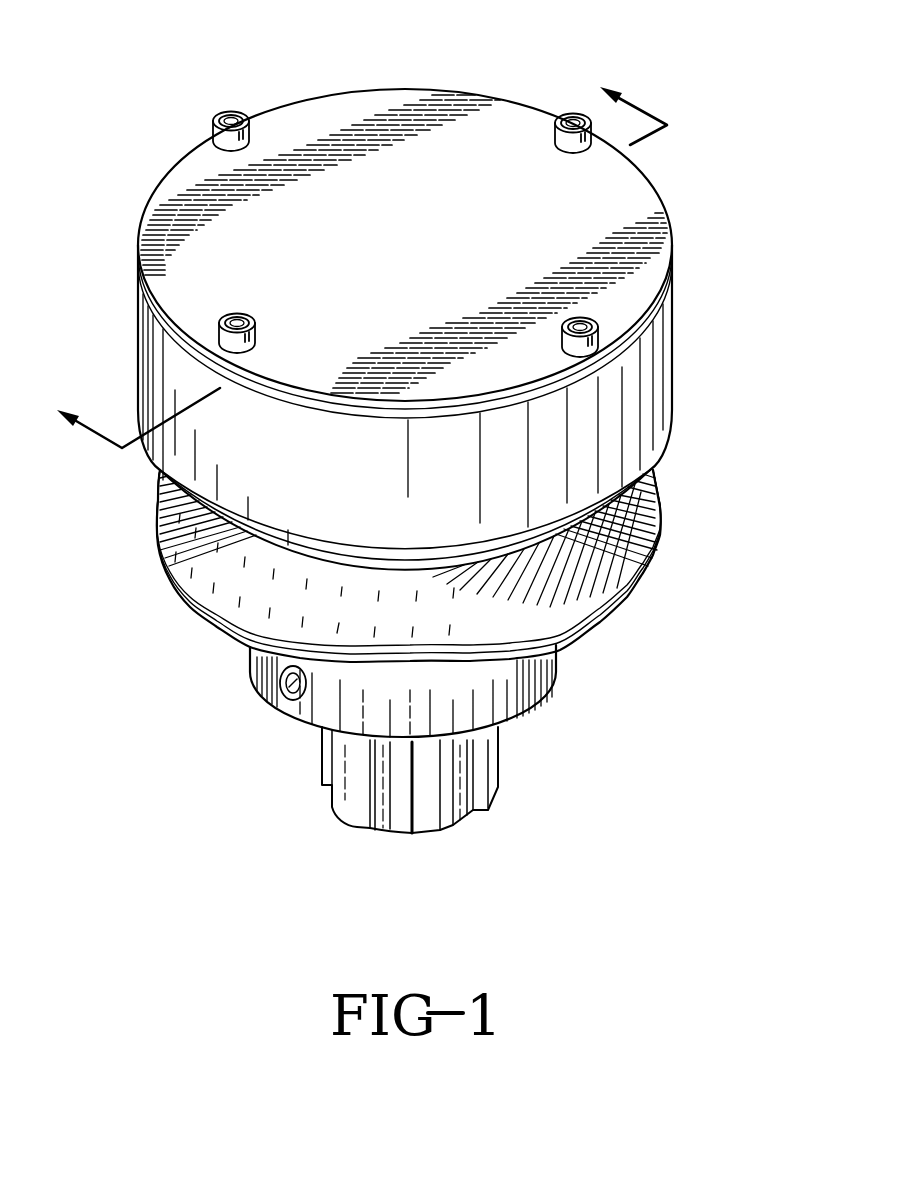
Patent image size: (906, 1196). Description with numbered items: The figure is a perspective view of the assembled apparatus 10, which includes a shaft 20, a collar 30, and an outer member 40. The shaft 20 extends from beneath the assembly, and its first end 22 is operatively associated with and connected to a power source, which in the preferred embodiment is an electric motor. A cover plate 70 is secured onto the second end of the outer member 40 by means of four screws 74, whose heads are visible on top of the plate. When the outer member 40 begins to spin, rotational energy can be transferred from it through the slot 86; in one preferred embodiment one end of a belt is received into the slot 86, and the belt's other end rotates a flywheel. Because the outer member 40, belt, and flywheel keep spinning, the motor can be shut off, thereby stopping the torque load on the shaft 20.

The apparatus 10 is at (737, 184).
The shaft 20 is at (443, 760).
The first end 22 is at (438, 825).
The collar 30 is at (617, 605).
The outer member 40 is at (628, 420).
The cover plate 70 is at (368, 110).
The screws 74 is at (592, 346).
The slot 86 is at (430, 577).